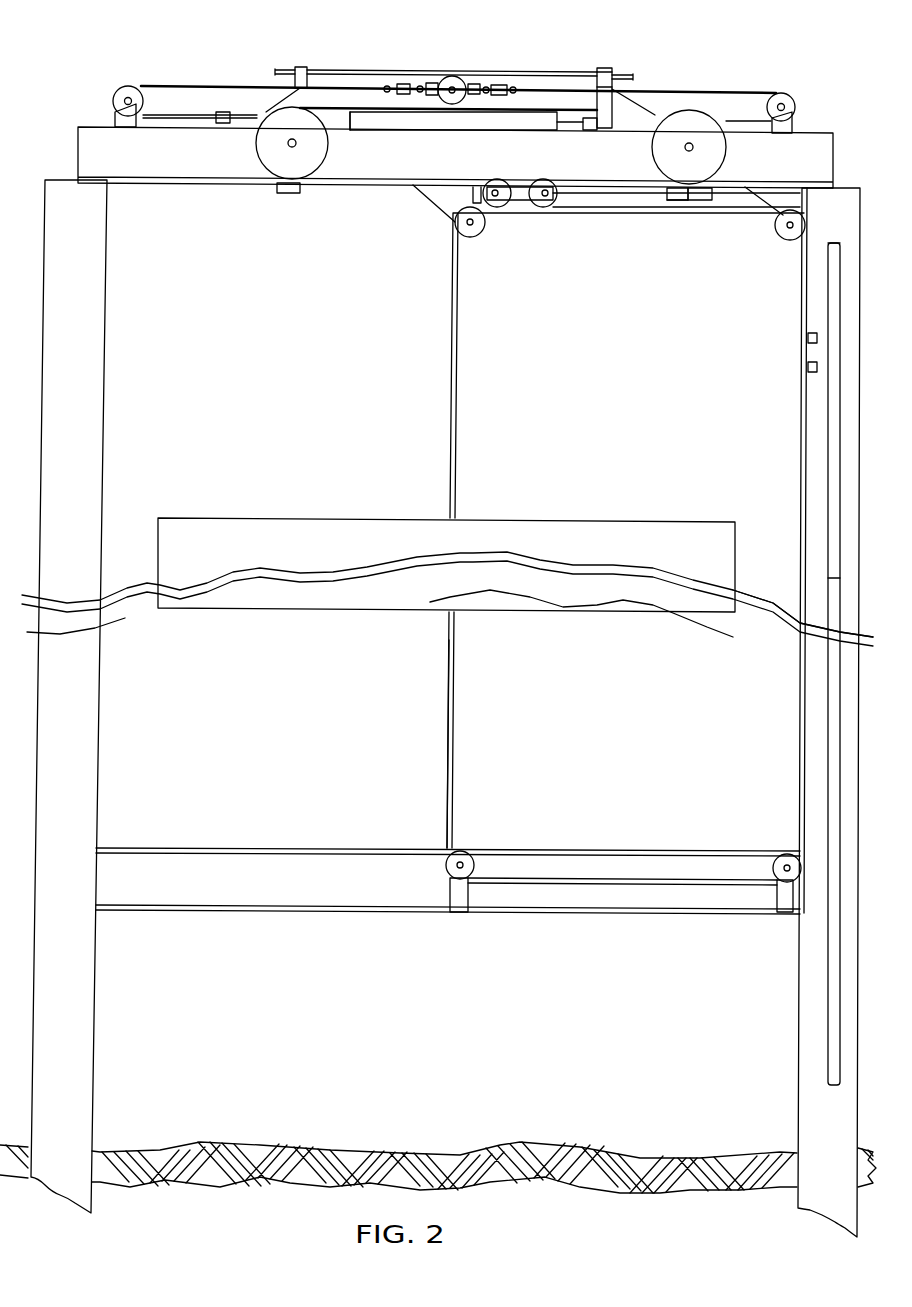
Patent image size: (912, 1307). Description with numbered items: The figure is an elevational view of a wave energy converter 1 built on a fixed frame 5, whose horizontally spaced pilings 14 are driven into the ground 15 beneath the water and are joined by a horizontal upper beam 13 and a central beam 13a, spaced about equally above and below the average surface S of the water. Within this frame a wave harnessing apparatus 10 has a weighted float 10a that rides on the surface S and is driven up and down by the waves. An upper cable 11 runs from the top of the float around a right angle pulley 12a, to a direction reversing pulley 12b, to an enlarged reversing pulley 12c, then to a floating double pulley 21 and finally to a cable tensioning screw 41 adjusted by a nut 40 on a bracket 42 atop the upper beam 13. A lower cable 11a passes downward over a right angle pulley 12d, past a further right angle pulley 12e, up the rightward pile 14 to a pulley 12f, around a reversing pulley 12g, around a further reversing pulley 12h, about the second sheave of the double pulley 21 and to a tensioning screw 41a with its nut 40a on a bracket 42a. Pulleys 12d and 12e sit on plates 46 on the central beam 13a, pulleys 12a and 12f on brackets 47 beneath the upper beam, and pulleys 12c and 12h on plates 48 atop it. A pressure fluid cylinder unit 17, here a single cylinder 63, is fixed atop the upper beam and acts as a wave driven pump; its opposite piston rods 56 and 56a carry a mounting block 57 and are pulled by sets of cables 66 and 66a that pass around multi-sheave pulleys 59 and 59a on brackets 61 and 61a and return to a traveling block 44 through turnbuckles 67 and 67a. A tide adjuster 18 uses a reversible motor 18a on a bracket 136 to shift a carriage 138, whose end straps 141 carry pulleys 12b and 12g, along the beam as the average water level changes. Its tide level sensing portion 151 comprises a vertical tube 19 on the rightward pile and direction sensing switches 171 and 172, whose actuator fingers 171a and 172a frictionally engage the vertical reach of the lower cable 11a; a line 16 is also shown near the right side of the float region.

The wave energy converter 1 is at (445, 149).
The fixed frame 5 is at (425, 151).
The wave harnessing apparatus 10 is at (446, 530).
The weighted float 10a is at (595, 525).
The upper cable 11 is at (460, 397).
The lower cable 11a is at (455, 710).
The right angle direction change pulley 12a is at (470, 232).
The direction reversing pulley 12b is at (495, 184).
The enlarged direction reversing pulley 12c is at (258, 150).
The right angle pulley 12d is at (470, 856).
The right angle pulley 12e is at (780, 858).
The right angle pulley 12f is at (780, 235).
The direction reversing pulley 12g is at (600, 167).
The direction reversing pulley 12h is at (727, 148).
The upper beam 13 is at (95, 152).
The central beam 13a is at (300, 870).
The pilings 14 is at (50, 313).
The ground 15 is at (260, 1152).
The cable 16 is at (770, 605).
The pressure fluid cylinder unit 17 is at (387, 124).
The tide adjuster 18 is at (706, 220).
The reversible DC adjuster motor 18a is at (700, 200).
The elongate tube 19 is at (833, 1000).
The floating double pulley 21 is at (455, 88).
The nut 40 is at (296, 70).
The nut 40a is at (613, 72).
The cable tensioning screw 41 is at (315, 72).
The cable tensioning screw 41a is at (604, 72).
The bracket 42 is at (292, 88).
The bracket 42a is at (612, 96).
The traveling block 44 is at (427, 85).
The plates 46 is at (452, 903).
The brackets 47 is at (446, 195).
The plates 48 is at (290, 182).
The piston rod 56 is at (333, 120).
The piston rod 56a is at (586, 128).
The mounting block 57 is at (222, 114).
The multi-sheave pulley 59 is at (118, 95).
The multi-sheave pulley 59a is at (790, 96).
The bracket 61 is at (118, 118).
The bracket 61a is at (790, 127).
The cylinder 63 is at (453, 119).
The cables 66 is at (148, 90).
The cables 66a is at (716, 92).
The turnbuckles 67 is at (403, 85).
The turnbuckles 67a is at (507, 88).
The bracket 136 is at (672, 198).
The carriage 138 is at (527, 206).
The end straps 141 is at (517, 195).
The tide level sensing portion 151 is at (838, 230).
The direction sensing switch 171 is at (772, 329).
The actuator finger 171a is at (808, 340).
The direction sensing switch 172 is at (772, 380).
The actuator finger 172a is at (808, 368).
The surface S is at (148, 583).